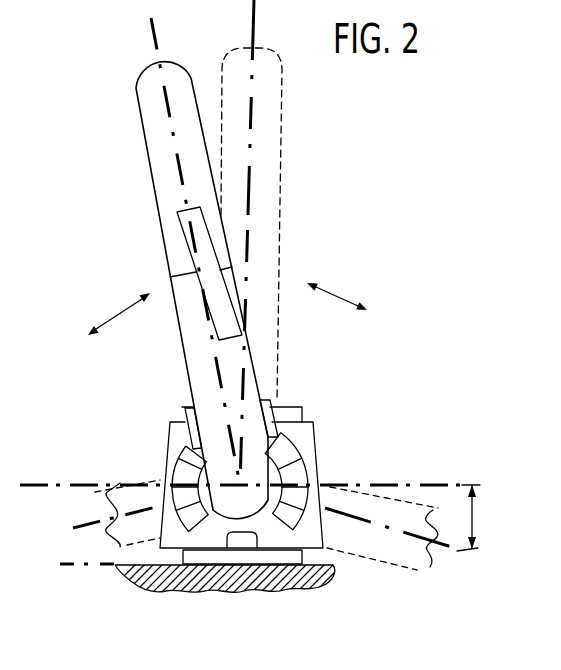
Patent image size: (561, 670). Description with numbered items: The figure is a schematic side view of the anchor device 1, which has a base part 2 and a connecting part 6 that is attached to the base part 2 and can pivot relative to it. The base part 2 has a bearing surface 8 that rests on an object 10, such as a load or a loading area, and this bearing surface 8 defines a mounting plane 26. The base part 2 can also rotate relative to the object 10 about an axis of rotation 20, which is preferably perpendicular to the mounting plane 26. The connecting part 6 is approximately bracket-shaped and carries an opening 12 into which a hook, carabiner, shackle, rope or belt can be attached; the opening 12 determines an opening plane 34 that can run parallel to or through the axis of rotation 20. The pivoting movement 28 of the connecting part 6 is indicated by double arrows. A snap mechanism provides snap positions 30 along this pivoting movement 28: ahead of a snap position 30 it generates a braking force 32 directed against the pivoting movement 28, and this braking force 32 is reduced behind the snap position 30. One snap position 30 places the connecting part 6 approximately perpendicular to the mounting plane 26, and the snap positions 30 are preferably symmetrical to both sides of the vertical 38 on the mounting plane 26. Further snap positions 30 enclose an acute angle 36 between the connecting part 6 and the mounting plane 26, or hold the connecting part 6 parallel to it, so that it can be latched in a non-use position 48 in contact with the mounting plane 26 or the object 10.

The anchor device 1 is at (357, 196).
The base part 2 is at (313, 428).
The connecting part 6 is at (284, 126).
The bearing surface 8 is at (243, 586).
The object 10 is at (170, 583).
The opening 12 is at (134, 166).
The axis of rotation 20 is at (256, 172).
The mounting plane 26 is at (70, 563).
The pivoting movement 28 is at (114, 316).
The snap position 30 is at (284, 88).
The braking force 32 is at (209, 54).
The opening plane 34 is at (148, 34).
The acute angle 36 is at (474, 524).
The vertical 38 is at (255, 238).
The non-use position 48 is at (442, 567).